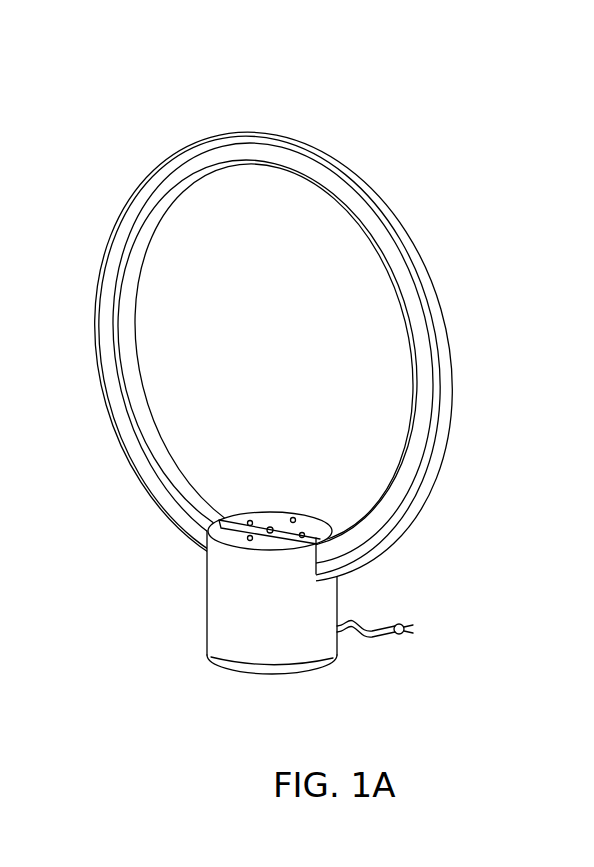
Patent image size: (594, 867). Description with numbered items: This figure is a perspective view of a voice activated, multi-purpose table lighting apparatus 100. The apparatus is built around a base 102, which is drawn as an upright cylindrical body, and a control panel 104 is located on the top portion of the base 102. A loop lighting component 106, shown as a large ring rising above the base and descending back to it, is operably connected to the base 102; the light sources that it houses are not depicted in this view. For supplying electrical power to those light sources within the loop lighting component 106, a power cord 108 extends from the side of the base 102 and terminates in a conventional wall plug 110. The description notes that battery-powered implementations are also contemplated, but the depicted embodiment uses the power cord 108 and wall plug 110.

The voice activated table lighting apparatus 100 is at (343, 92).
The base 102 is at (350, 582).
The control panel 104 is at (270, 524).
The loop lighting component 106 is at (396, 213).
The power cord 108 is at (347, 634).
The wall plug 110 is at (403, 622).